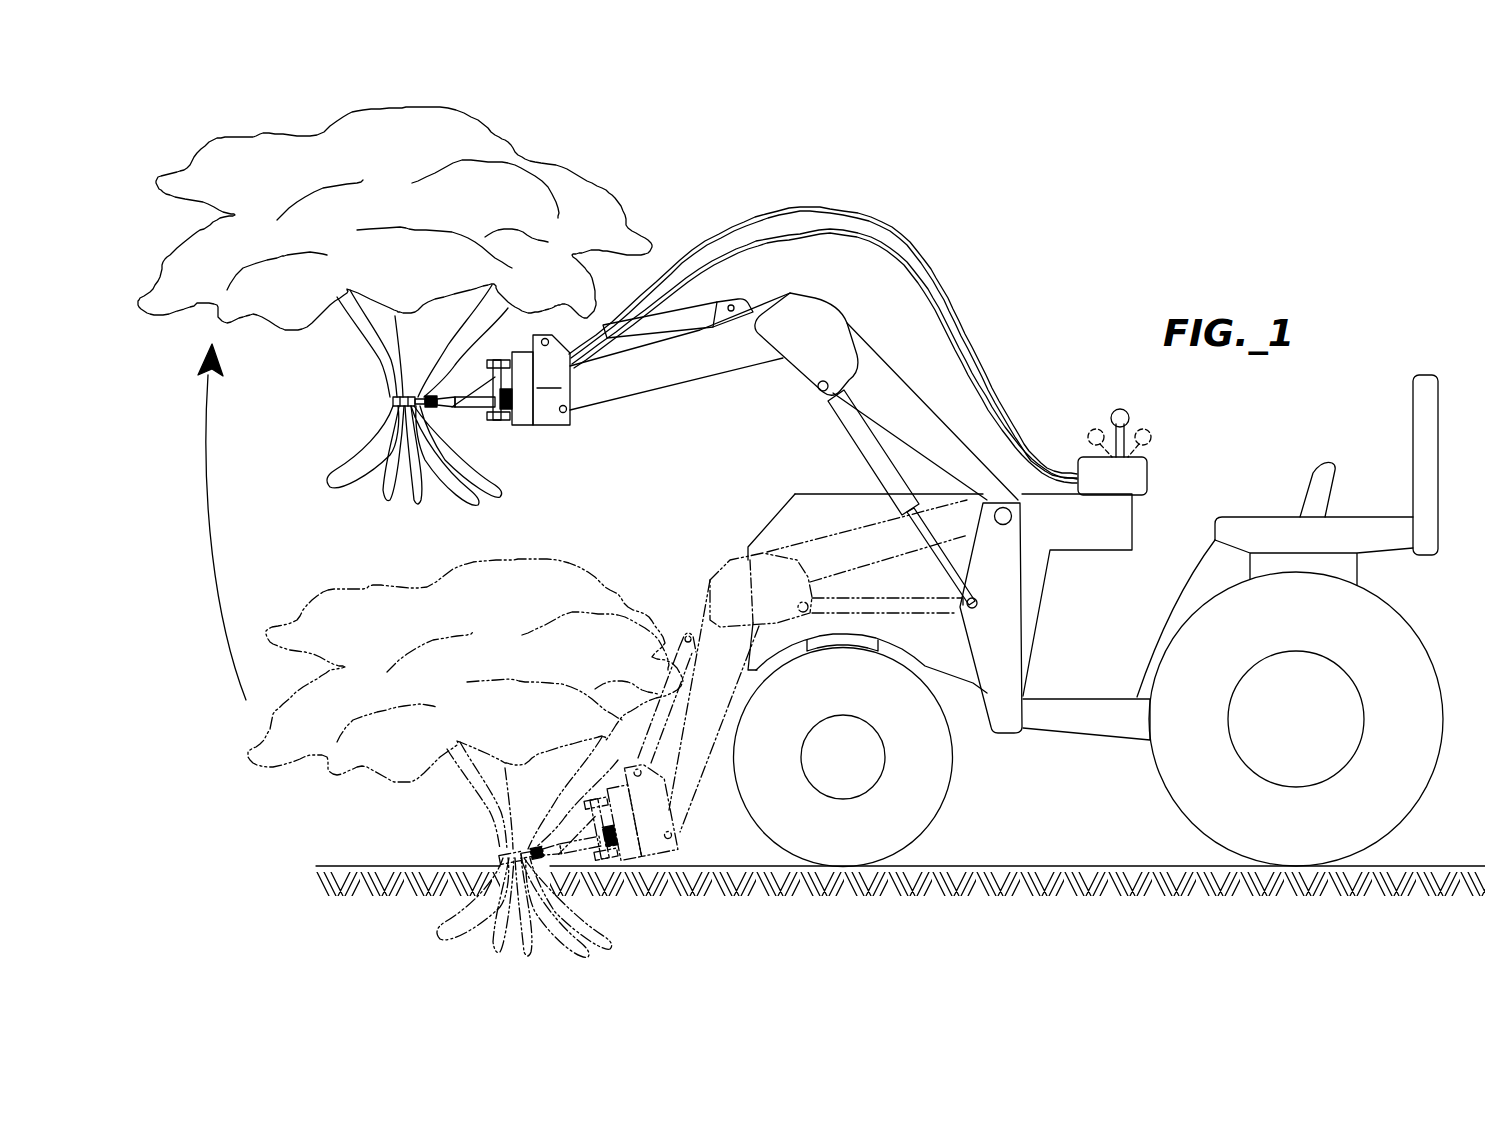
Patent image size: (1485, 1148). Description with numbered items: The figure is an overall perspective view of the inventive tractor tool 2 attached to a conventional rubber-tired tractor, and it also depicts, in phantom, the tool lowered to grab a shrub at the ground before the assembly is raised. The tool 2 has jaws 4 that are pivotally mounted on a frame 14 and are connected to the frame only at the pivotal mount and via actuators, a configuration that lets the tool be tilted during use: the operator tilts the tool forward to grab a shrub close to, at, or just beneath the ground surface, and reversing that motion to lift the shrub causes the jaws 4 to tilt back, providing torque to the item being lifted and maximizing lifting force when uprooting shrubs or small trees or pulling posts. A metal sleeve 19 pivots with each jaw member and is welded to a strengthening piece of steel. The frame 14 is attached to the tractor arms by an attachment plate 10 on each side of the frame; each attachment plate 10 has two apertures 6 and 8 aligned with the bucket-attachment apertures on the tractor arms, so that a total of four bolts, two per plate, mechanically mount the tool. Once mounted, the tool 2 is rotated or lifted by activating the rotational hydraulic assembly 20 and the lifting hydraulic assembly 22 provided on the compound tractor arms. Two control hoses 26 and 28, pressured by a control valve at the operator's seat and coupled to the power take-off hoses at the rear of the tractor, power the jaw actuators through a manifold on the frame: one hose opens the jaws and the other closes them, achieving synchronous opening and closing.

The tractor tool 2 is at (515, 399).
The jaws 4 is at (392, 400).
The aperture 6 is at (542, 340).
The aperture 8 is at (566, 414).
The attachment plate 10 is at (541, 380).
The frame 14 is at (506, 421).
The metal sleeve 19 is at (493, 380).
The rotational hydraulic assembly 20 is at (705, 296).
The lifting hydraulic assembly 22 is at (848, 447).
The control hose 26 is at (952, 290).
The control hose 28 is at (952, 329).